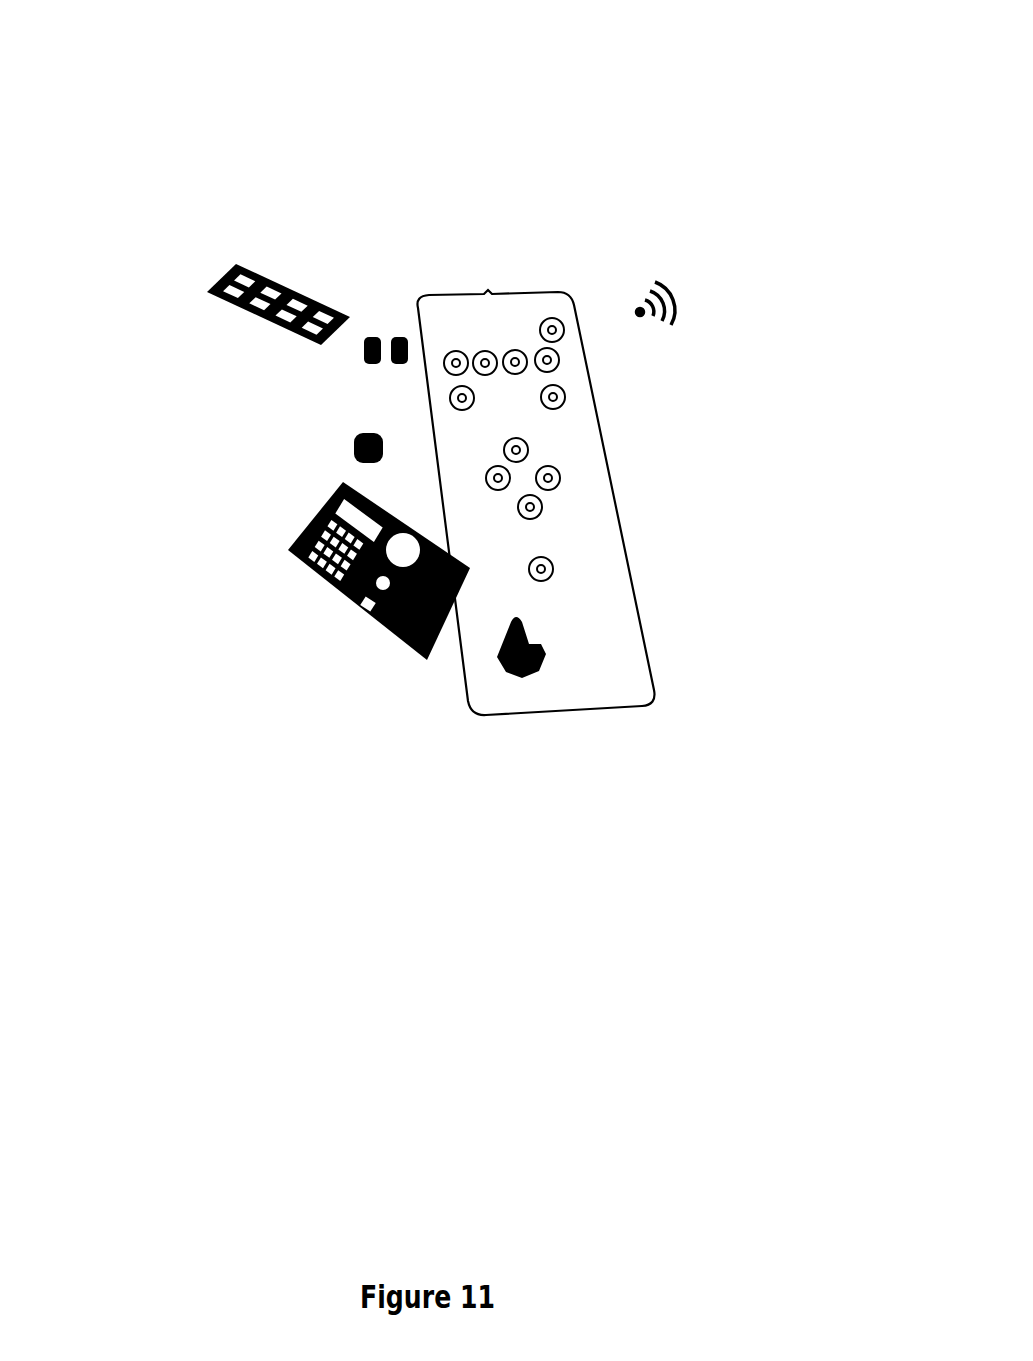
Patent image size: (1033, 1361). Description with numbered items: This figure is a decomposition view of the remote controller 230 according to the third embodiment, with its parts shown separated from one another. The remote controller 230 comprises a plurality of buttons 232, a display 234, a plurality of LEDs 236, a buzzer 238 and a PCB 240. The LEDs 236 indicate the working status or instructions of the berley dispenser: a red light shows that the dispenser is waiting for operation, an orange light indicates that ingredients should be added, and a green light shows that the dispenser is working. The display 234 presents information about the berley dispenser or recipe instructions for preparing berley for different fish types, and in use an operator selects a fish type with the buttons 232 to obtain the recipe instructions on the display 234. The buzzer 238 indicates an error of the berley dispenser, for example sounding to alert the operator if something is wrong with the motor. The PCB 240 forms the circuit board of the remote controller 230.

The remote controller 230 is at (664, 157).
The buttons 232 is at (556, 483).
The display 234 is at (227, 280).
The LEDs 236 is at (401, 339).
The buzzer 238 is at (354, 455).
The PCB 240 is at (343, 597).